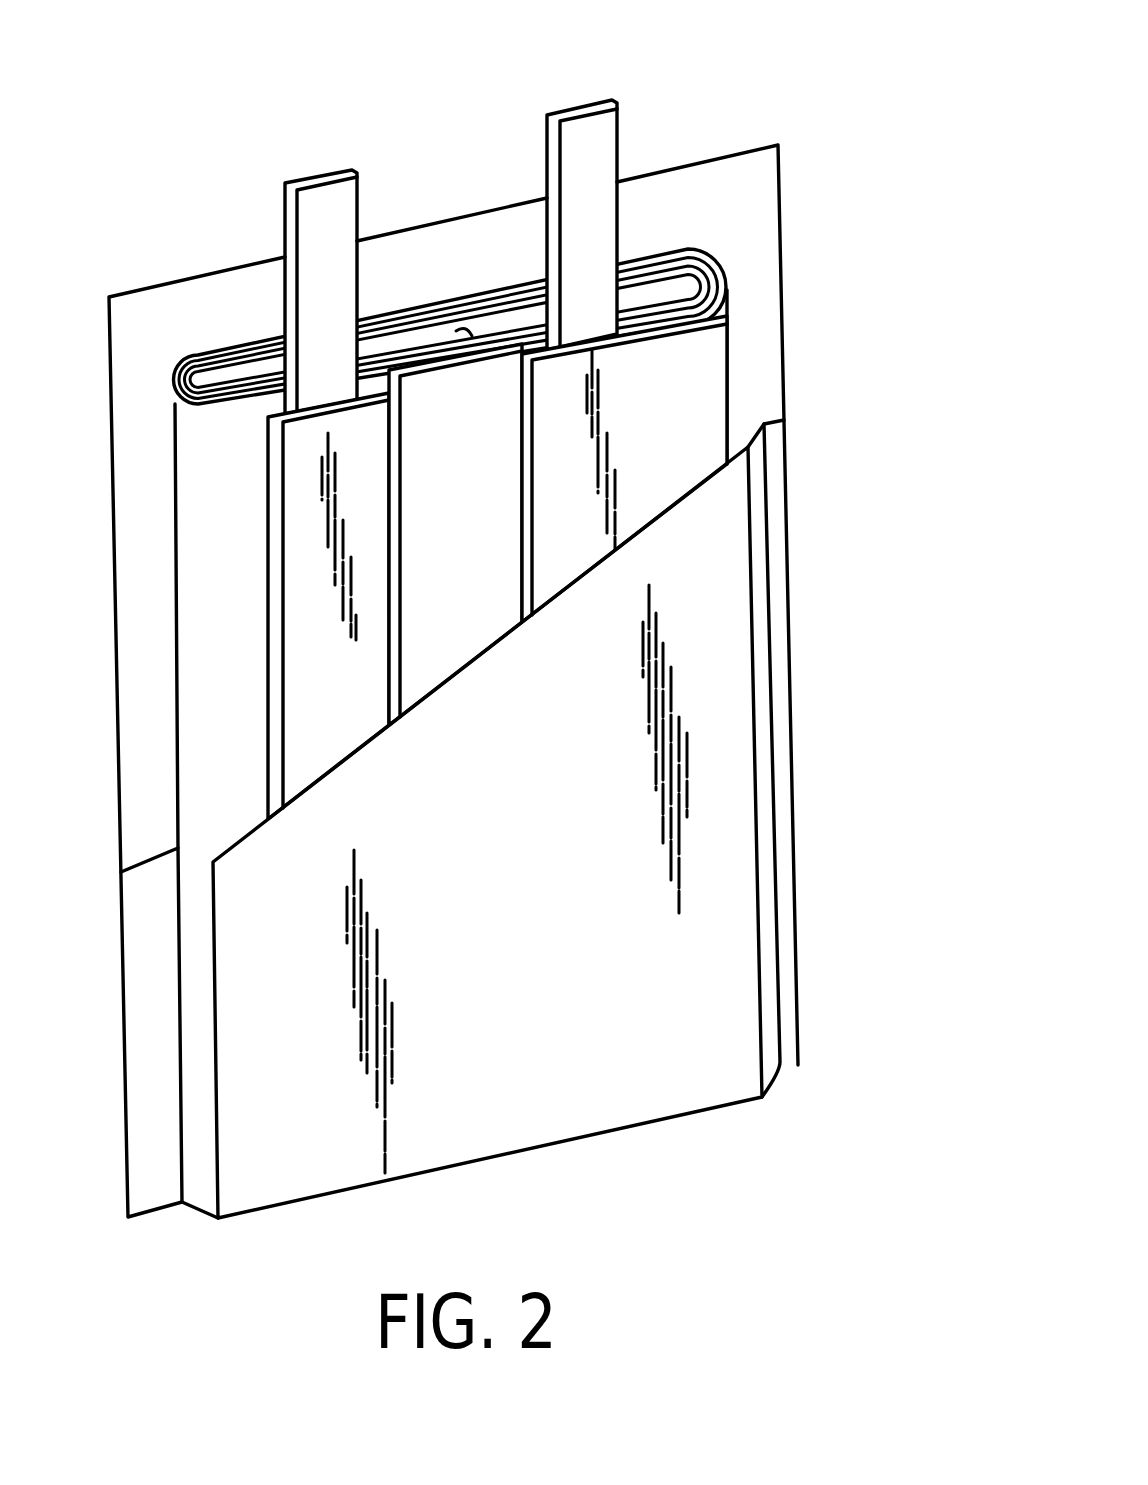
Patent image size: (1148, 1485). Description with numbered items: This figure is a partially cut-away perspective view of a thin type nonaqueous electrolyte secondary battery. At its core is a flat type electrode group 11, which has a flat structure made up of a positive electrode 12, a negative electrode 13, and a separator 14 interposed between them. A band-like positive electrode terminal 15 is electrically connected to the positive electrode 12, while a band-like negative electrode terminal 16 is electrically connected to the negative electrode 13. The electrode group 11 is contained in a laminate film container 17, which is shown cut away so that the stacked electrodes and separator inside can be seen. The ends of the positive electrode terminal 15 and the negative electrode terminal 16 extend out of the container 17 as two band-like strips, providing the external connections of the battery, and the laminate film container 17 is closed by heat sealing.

The electrode group 11 is at (874, 329).
The positive electrode 12 is at (707, 358).
The negative electrode 13 is at (363, 605).
The separator 14 is at (503, 463).
The positive electrode terminal 15 is at (588, 128).
The negative electrode terminal 16 is at (327, 195).
The laminate film container 17 is at (718, 827).